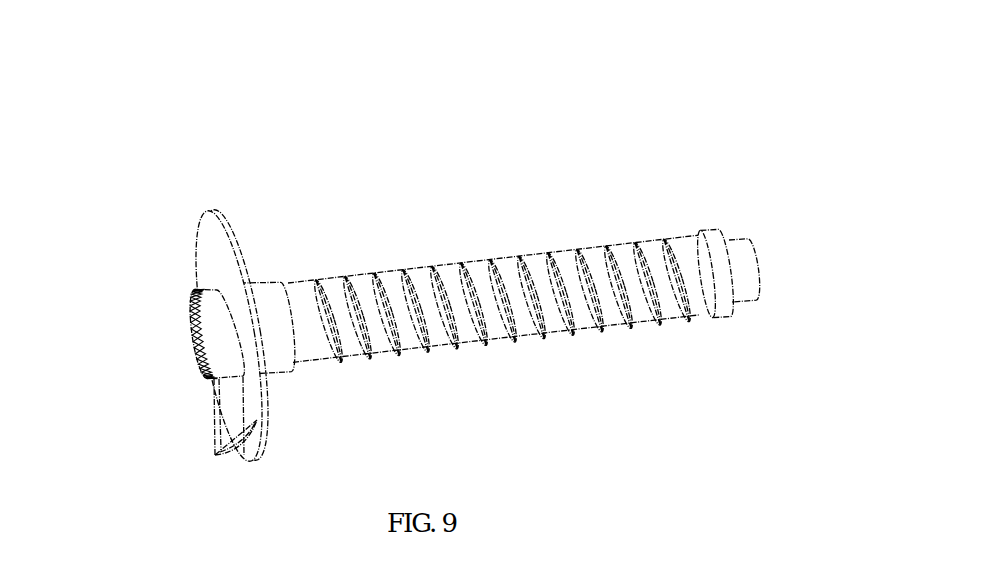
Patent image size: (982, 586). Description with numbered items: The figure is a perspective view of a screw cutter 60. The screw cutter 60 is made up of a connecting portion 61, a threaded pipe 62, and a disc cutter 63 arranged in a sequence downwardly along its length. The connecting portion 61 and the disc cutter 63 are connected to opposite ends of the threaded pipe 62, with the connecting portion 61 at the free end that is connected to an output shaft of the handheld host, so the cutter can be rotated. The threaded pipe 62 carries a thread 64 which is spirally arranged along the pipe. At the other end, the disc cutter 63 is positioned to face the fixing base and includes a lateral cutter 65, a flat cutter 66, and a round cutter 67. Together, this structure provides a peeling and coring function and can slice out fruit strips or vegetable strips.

The screw cutter 60 is at (212, 45).
The connecting portion 61 is at (737, 243).
The threaded pipe 62 is at (450, 273).
The disc cutter 63 is at (164, 341).
The thread 64 is at (495, 257).
The lateral cutter 65 is at (213, 430).
The flat cutter 66 is at (213, 400).
The round cutter 67 is at (192, 349).